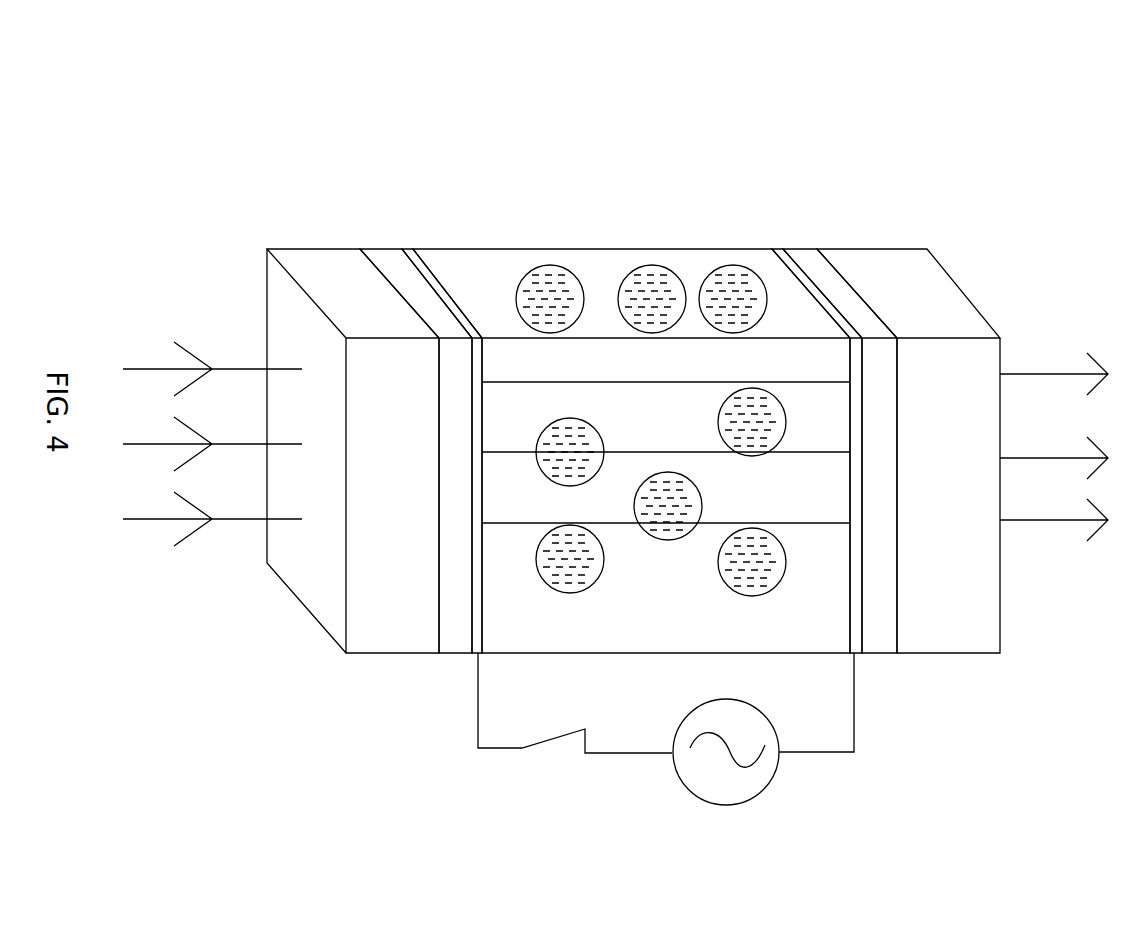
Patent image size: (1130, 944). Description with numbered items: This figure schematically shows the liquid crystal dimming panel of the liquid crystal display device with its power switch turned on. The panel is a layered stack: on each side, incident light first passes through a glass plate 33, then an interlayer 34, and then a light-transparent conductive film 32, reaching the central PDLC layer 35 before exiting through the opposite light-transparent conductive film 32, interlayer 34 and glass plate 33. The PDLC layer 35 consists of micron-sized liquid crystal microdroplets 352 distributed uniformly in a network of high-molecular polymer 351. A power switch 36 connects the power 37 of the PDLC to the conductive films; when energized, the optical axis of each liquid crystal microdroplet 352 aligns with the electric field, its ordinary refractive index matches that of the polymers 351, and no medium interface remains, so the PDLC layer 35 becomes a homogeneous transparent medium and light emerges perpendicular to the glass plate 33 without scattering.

The light-transparent conductive film 32 is at (443, 295).
The glass plate 33 is at (323, 268).
The interlayer 34 is at (392, 268).
The PDLC layer 35 is at (631, 333).
The polymer 351 is at (539, 262).
The liquid crystal microdroplet 352 is at (654, 283).
The power switch 36 is at (553, 742).
The power 37 is at (768, 760).